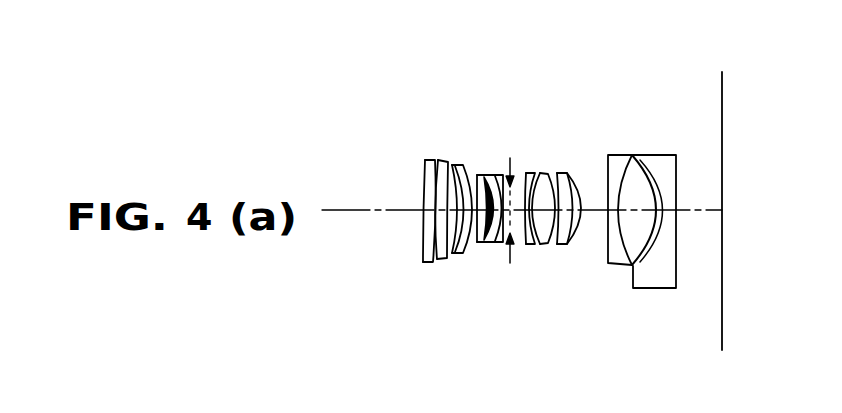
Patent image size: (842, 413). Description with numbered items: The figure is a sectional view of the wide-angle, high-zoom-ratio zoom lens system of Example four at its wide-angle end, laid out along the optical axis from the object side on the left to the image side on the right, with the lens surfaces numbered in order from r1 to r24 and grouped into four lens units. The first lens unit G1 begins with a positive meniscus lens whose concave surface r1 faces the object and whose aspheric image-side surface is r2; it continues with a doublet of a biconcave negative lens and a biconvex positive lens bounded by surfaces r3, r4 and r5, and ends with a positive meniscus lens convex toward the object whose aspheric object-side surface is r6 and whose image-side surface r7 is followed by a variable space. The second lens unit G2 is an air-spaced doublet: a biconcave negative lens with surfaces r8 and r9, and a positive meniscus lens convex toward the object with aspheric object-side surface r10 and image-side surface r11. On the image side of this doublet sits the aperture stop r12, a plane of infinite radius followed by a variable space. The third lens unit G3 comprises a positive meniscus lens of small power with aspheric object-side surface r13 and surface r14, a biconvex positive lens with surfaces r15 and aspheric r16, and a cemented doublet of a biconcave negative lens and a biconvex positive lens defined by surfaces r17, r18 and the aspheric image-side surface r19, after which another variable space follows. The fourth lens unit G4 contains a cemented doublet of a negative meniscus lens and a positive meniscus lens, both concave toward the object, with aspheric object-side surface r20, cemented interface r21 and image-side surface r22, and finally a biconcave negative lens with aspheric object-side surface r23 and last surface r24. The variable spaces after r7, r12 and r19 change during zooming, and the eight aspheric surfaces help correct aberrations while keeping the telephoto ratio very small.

The first lens unit G1 is at (467, 50).
The second lens unit G2 is at (513, 50).
The third lens unit G3 is at (573, 50).
The fourth lens unit G4 is at (677, 50).
The lens surface r1 is at (425, 167).
The lens surface r2 is at (434, 161).
The lens surface r3 is at (437, 160).
The lens surface r4 is at (448, 161).
The lens surface r5 is at (452, 165).
The lens surface r6 is at (456, 166).
The lens surface r7 is at (464, 165).
The lens surface r8 is at (478, 176).
The lens surface r9 is at (486, 176).
The lens surface r10 is at (497, 176).
The lens surface r11 is at (503, 175).
The aperture stop r12 is at (523, 195).
The lens surface r13 is at (527, 172).
The lens surface r14 is at (536, 172).
The lens surface r15 is at (540, 172).
The lens surface r16 is at (550, 174).
The lens surface r17 is at (560, 173).
The lens surface r18 is at (566, 172).
The lens surface r19 is at (581, 190).
The lens surface r20 is at (608, 156).
The lens surface r21 is at (630, 156).
The lens surface r22 is at (636, 155).
The lens surface r23 is at (641, 162).
The lens surface r24 is at (678, 157).